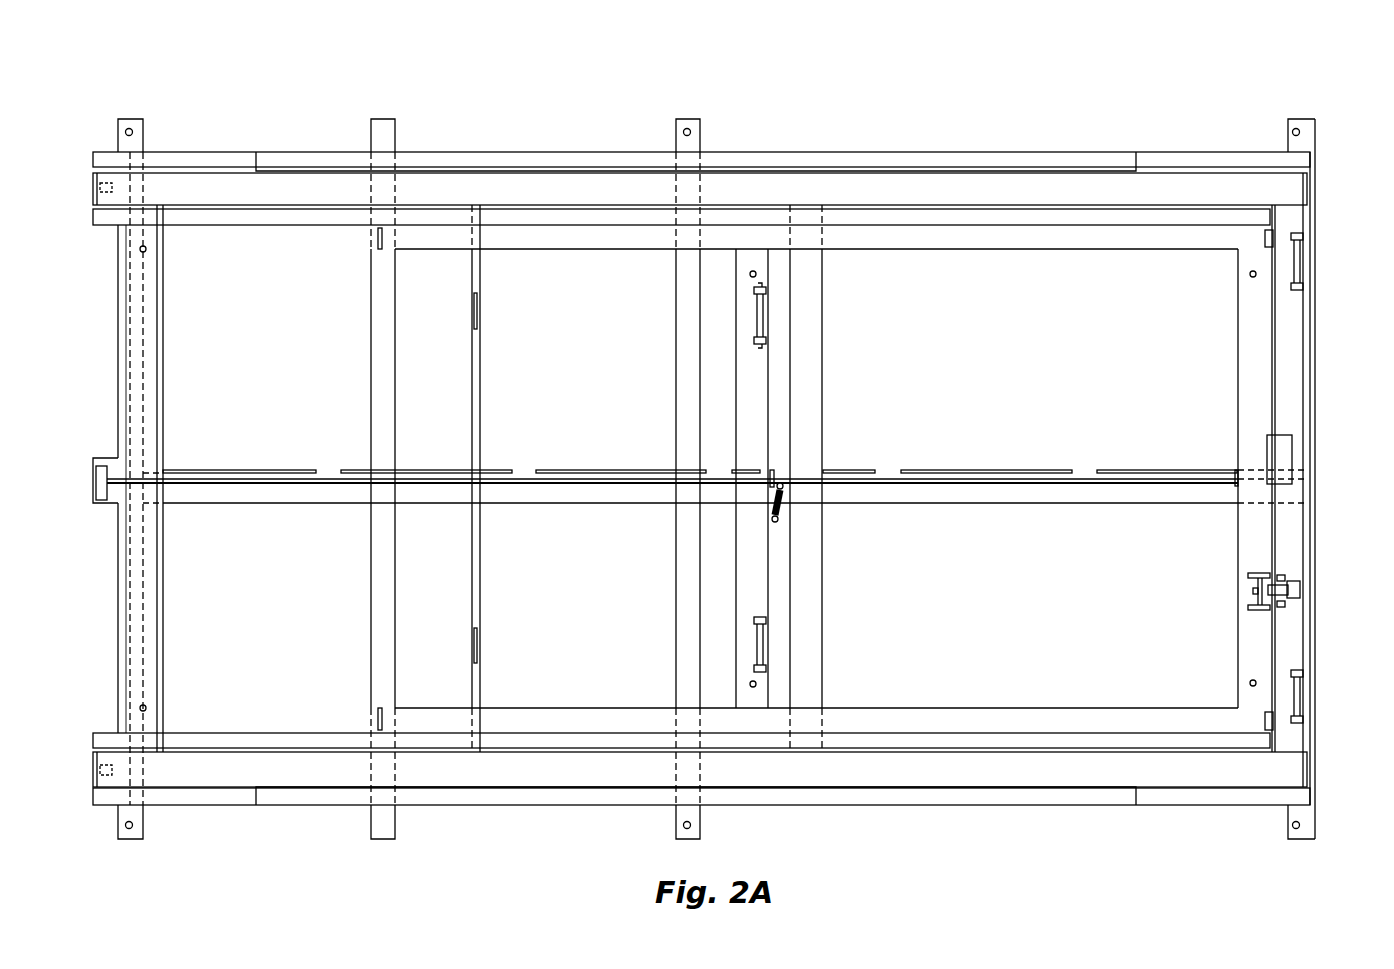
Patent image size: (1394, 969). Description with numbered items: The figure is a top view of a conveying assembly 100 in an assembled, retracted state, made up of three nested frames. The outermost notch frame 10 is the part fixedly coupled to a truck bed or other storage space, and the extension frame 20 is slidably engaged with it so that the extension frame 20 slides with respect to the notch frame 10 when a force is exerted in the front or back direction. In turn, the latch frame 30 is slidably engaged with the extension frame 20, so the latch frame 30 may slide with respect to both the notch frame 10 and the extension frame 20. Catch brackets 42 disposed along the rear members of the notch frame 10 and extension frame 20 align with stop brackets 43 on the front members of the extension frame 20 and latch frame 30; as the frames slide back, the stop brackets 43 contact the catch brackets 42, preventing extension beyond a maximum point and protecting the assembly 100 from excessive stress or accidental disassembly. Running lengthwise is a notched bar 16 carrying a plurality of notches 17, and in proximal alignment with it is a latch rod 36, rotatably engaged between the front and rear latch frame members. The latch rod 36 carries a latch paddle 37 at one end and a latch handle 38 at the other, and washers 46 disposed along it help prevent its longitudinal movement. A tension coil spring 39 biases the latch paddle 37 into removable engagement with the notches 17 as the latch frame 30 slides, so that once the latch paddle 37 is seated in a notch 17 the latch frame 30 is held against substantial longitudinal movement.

The notch frame 10 is at (89, 104).
The conveying assembly 100 is at (1080, 96).
The extension frame 20 is at (88, 188).
The latch frame 30 is at (88, 217).
The notched bar 16 is at (605, 496).
The notches 17 is at (875, 470).
The latch rod 36 is at (527, 476).
The latch paddle 37 is at (1292, 446).
The latch handle 38 is at (100, 478).
The tension coil spring 39 is at (782, 505).
The catch brackets 42 is at (380, 240).
The stop brackets 43 is at (762, 322).
The washers 46 is at (773, 471).